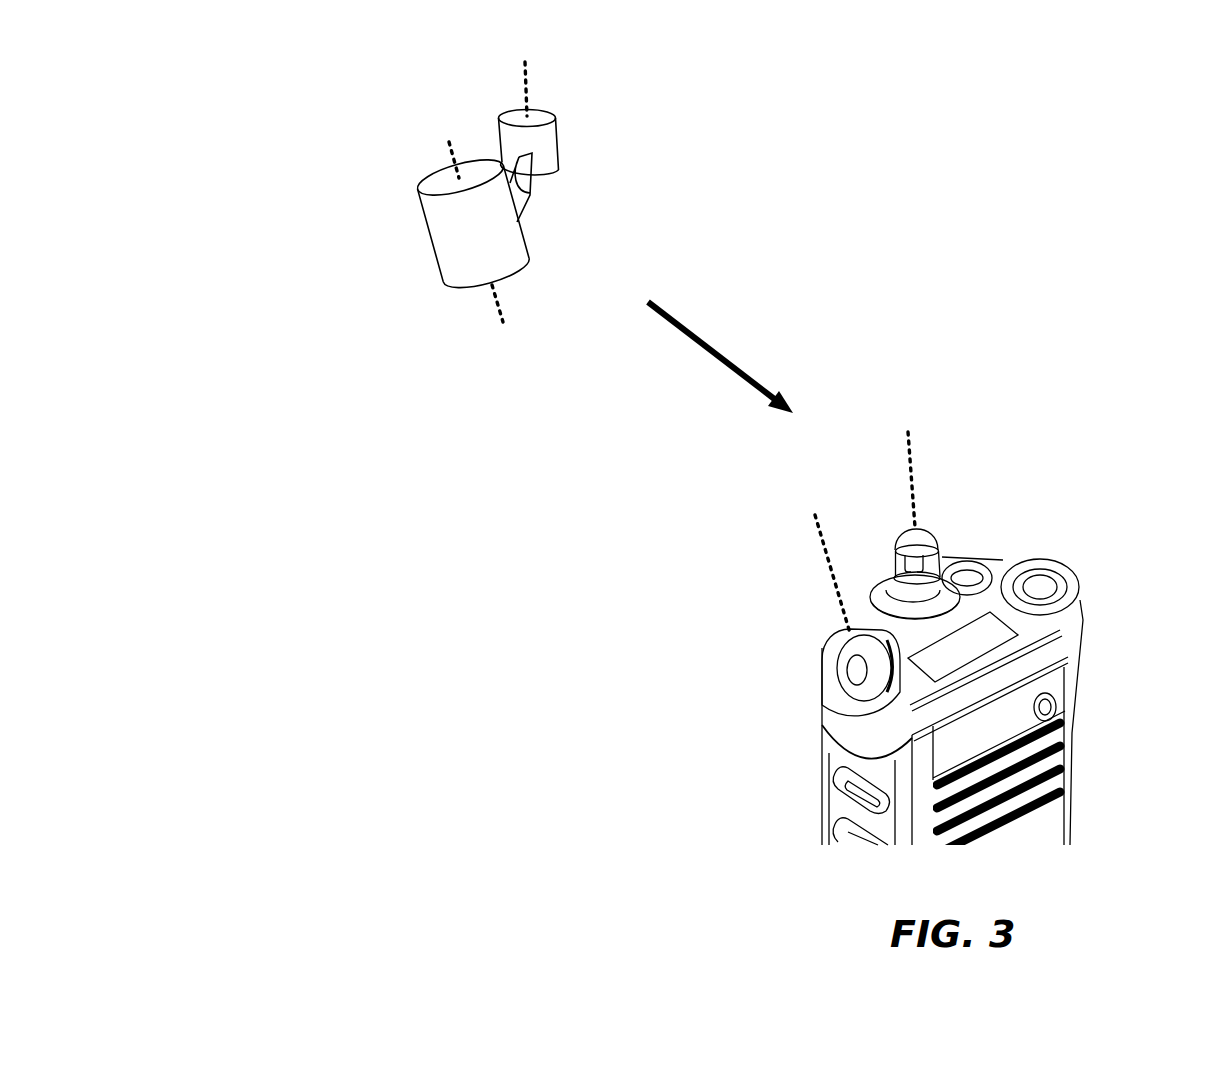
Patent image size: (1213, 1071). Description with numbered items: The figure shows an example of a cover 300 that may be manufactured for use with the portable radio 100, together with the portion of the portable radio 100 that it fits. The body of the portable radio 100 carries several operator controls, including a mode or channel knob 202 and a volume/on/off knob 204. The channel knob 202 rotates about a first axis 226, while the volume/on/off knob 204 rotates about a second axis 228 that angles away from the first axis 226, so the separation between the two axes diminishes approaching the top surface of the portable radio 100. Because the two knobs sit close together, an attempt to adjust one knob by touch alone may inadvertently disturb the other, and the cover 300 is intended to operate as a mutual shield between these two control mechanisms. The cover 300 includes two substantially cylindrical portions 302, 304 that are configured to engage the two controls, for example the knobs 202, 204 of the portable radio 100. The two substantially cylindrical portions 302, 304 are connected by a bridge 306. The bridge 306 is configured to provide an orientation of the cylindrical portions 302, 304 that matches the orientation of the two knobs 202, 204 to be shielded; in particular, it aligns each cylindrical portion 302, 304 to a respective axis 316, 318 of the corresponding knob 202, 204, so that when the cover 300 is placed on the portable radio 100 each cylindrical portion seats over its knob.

The portable radio 100 is at (1133, 605).
The channel knob 202 is at (945, 510).
The volume/on/off knob 204 is at (793, 645).
The first axis 226 is at (912, 452).
The second axis 228 is at (815, 518).
The cover 300 is at (311, 61).
The first cylindrical portion 302 is at (547, 142).
The second cylindrical portion 304 is at (450, 252).
The bridge 306 is at (531, 203).
The axis of first cylindrical portion 316 is at (523, 63).
The axis of second cylindrical portion 318 is at (447, 143).